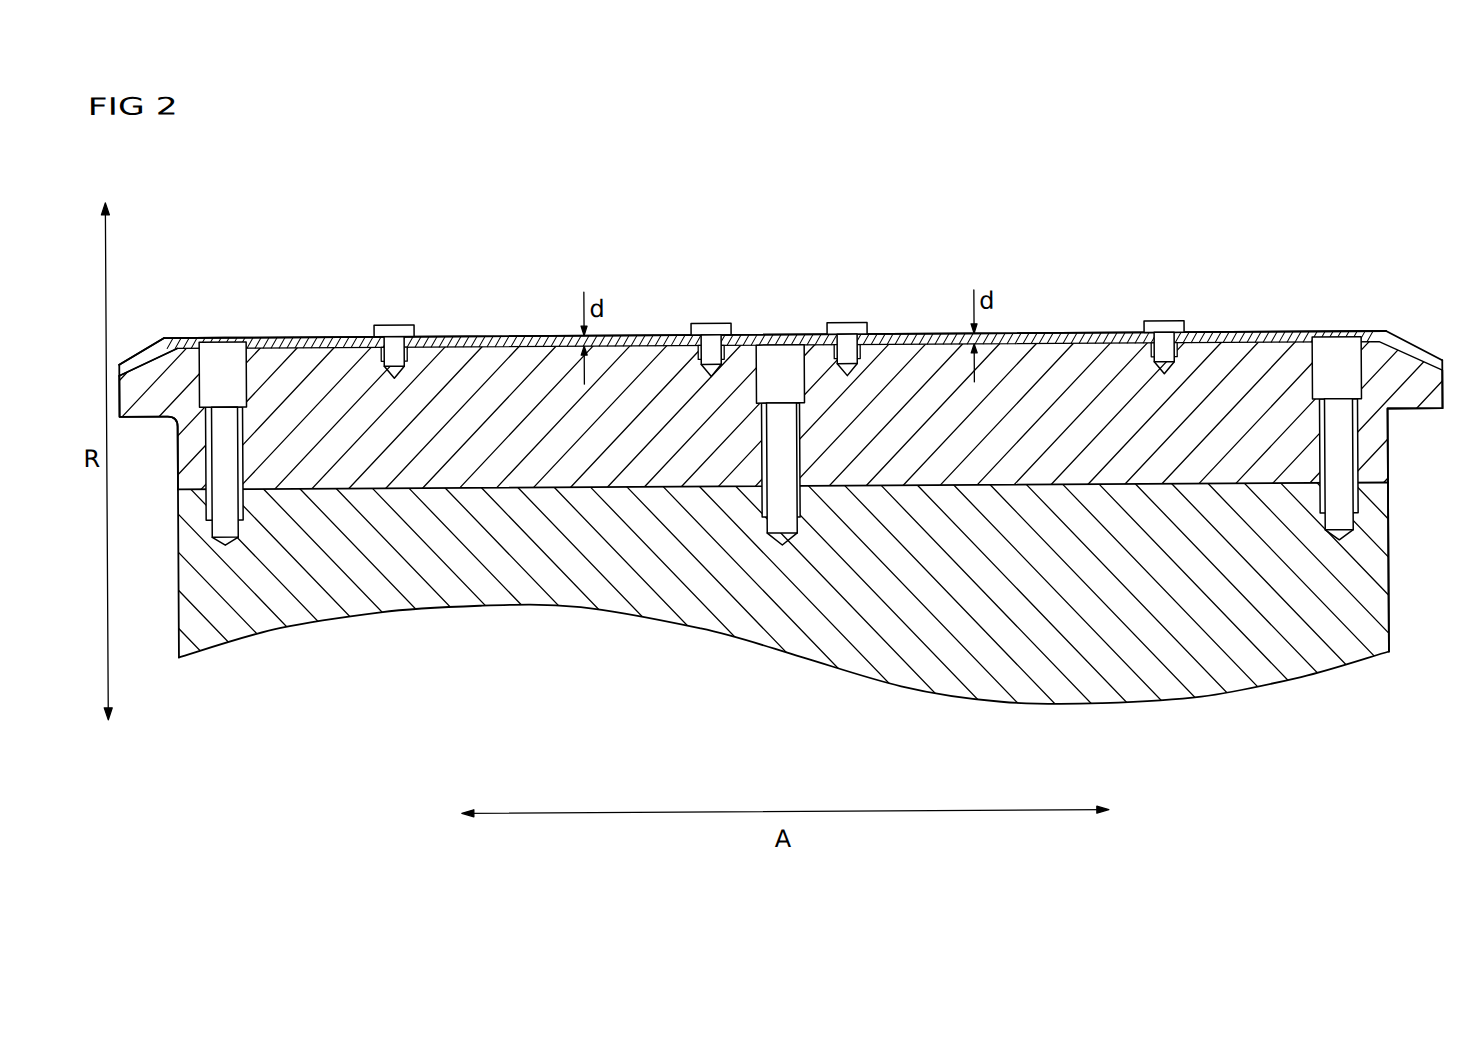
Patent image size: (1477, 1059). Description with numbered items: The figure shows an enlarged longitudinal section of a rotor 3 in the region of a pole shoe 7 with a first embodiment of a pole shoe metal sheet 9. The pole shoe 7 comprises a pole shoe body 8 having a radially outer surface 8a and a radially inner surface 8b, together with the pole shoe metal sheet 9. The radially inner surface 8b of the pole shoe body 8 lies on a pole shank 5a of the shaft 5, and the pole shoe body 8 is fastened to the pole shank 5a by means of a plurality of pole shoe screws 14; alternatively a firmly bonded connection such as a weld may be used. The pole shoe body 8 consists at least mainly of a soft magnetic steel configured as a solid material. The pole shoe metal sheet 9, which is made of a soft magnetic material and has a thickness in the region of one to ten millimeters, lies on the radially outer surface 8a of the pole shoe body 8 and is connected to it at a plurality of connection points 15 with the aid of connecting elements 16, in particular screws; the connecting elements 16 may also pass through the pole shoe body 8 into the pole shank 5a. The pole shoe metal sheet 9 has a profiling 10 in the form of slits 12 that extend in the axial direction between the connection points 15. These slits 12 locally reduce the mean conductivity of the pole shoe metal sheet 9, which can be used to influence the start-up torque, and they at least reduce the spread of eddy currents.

The rotor 3 is at (1341, 232).
The shaft 5 is at (1284, 657).
The pole shank 5a is at (1370, 619).
The pole shoe 7 is at (938, 358).
The pole shoe body 8 is at (188, 466).
The radially outer surface 8a is at (1420, 370).
The radially inner surface 8b is at (188, 487).
The pole shoe metal sheet 9 is at (160, 334).
The profiling 10 is at (285, 330).
The slits 12 is at (775, 296).
The pole shoe screws 14 is at (222, 352).
The connection points 15 is at (410, 353).
The connecting elements 16 is at (393, 323).